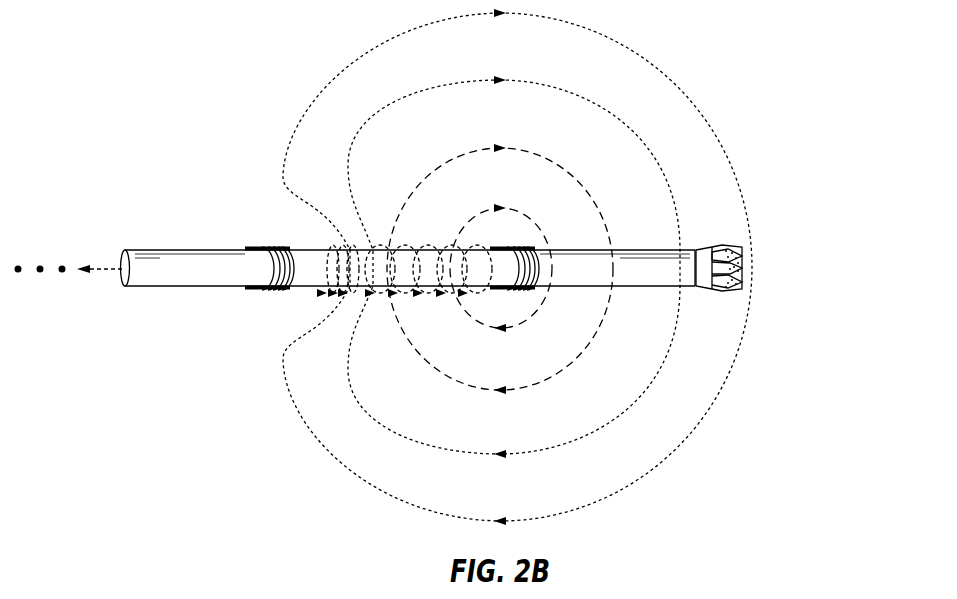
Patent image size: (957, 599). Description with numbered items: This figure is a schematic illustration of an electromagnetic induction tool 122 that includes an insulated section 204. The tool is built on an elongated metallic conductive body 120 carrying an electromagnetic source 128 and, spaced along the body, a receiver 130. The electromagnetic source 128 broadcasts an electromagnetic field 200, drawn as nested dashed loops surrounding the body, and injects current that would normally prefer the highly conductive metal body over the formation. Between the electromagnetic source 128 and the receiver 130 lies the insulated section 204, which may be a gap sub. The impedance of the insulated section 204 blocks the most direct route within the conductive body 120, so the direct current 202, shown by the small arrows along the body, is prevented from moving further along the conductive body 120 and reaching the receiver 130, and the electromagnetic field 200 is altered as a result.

The conductive body 120 is at (650, 250).
The electromagnetic induction tool 122 is at (818, 41).
The electromagnetic source 128 is at (497, 248).
The receiver 130 is at (263, 289).
The electromagnetic field 200 is at (710, 123).
The direct current 202 is at (440, 294).
The insulated section 204 is at (324, 248).